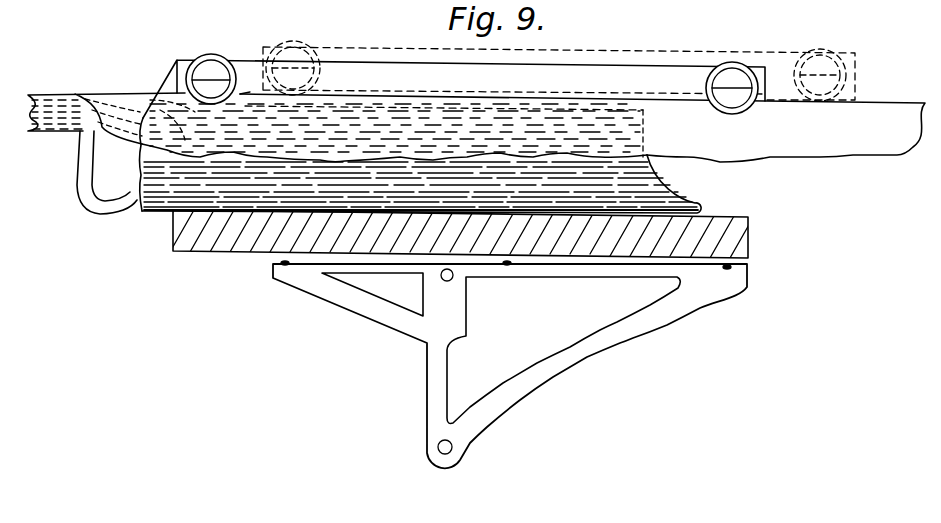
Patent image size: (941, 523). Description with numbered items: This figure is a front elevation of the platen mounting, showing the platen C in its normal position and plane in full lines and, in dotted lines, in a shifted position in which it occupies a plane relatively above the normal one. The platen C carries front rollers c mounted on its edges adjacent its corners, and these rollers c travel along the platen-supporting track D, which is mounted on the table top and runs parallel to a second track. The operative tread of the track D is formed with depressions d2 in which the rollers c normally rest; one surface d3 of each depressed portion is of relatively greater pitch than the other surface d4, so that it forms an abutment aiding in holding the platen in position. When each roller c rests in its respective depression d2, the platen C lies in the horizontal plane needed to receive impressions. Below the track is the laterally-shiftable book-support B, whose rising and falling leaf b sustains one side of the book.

The platen C is at (341, 72).
The front rollers c is at (213, 55).
The platen-supporting track D is at (476, 127).
The depression d2 is at (727, 112).
The surface of greater pitch d3 is at (183, 104).
The surface of lesser pitch d4 is at (240, 103).
The leaf b is at (230, 247).
The book-support B is at (510, 364).